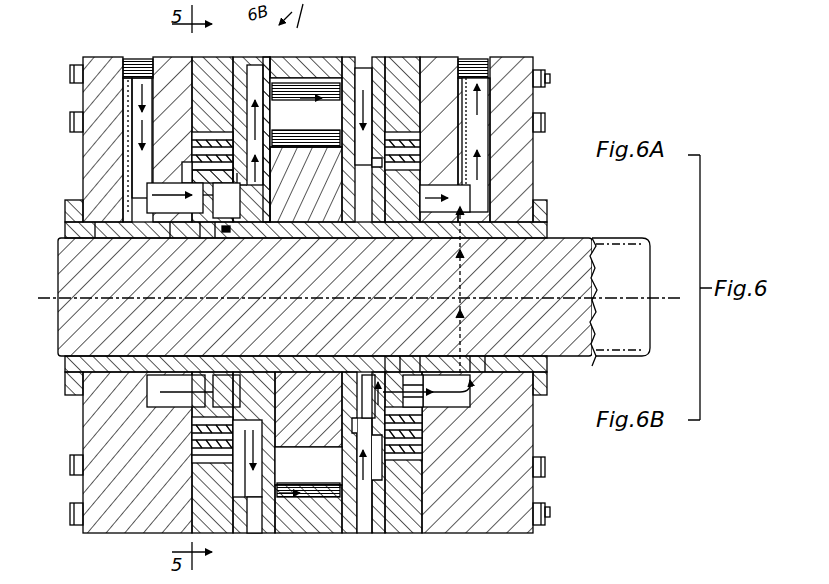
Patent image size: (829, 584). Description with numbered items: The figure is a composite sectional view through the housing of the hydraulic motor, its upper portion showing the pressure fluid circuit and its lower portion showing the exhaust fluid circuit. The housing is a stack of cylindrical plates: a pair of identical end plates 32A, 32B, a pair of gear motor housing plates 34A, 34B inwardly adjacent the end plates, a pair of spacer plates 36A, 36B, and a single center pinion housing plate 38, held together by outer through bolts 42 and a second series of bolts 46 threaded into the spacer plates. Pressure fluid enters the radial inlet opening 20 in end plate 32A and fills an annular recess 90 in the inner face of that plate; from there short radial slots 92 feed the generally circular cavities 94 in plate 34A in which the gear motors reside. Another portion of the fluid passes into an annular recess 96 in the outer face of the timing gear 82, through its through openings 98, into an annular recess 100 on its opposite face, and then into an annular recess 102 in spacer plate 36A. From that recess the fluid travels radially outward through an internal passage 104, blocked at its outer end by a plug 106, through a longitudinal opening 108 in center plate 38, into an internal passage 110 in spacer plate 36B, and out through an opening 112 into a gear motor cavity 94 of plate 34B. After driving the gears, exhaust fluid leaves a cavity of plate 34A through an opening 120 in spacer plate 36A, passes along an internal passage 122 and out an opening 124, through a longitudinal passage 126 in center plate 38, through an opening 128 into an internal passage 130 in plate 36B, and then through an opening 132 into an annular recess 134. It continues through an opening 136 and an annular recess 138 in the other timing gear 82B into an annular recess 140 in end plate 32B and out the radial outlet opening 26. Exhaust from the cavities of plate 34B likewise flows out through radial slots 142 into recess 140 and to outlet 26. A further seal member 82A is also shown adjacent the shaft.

In FIG. 6A, the radial inlet opening 20 is at (150, 75).
In FIG. 6A, the radial outlet opening 26 is at (484, 76).
In FIG. 6A, the end plate 32A is at (101, 57).
In FIG. 6A, the end plate 32B is at (511, 56).
In FIG. 6A, the gear motor housing plate 34A is at (218, 56).
In FIG. 6A, the gear motor housing plate 34B is at (406, 55).
In FIG. 6A, the spacer plate 36A is at (288, 56).
In FIG. 6A, the spacer plate 36B is at (394, 57).
In FIG. 6A, the center pinion housing plate 38 is at (303, 56).
In FIG. 6A, the through bolts 42 is at (70, 79).
In FIG. 6A, the bolts 46 is at (70, 127).
In FIG. 6A, the timing gear 82 is at (192, 139).
In FIG. 6A, the seal member 82A is at (206, 238).
In FIG. 6B, the timing gear 82B is at (396, 355).
In FIG. 6A, the annular recess 90 is at (138, 237).
In FIG. 6A, the radial slots 92 is at (183, 169).
In FIG. 6A, the circular cavity 94 is at (216, 134).
In FIG. 6A, the annular recess 96 is at (182, 239).
In FIG. 6A, the through openings 98 is at (205, 201).
In FIG. 6A, the annular recess 100 is at (229, 233).
In FIG. 6A, the annular recess 102 is at (269, 182).
In FIG. 6A, the internal passage 104 is at (272, 127).
In FIG. 6A, the plug 106 is at (253, 56).
In FIG. 6A, the longitudinal opening 108 is at (327, 100).
In FIG. 6A, the internal passage 110 is at (350, 74).
In FIG. 6A, the opening 112 is at (373, 164).
In FIG. 6B, the opening 120 is at (232, 465).
In FIG. 6B, the internal passage 122 is at (275, 462).
In FIG. 6B, the opening 124 is at (247, 529).
In FIG. 6B, the longitudinal passage 126 is at (306, 499).
In FIG. 6B, the opening 128 is at (348, 489).
In FIG. 6B, the internal passage 130 is at (381, 485).
In FIG. 6B, the opening 132 is at (415, 439).
In FIG. 6B, the annular recess 134 is at (380, 361).
In FIG. 6B, the opening 136 is at (422, 359).
In FIG. 6B, the annular recess 138 is at (475, 359).
In FIG. 6B, the annular recess 140 is at (454, 405).
In FIG. 6B, the radial slots 142 is at (430, 409).